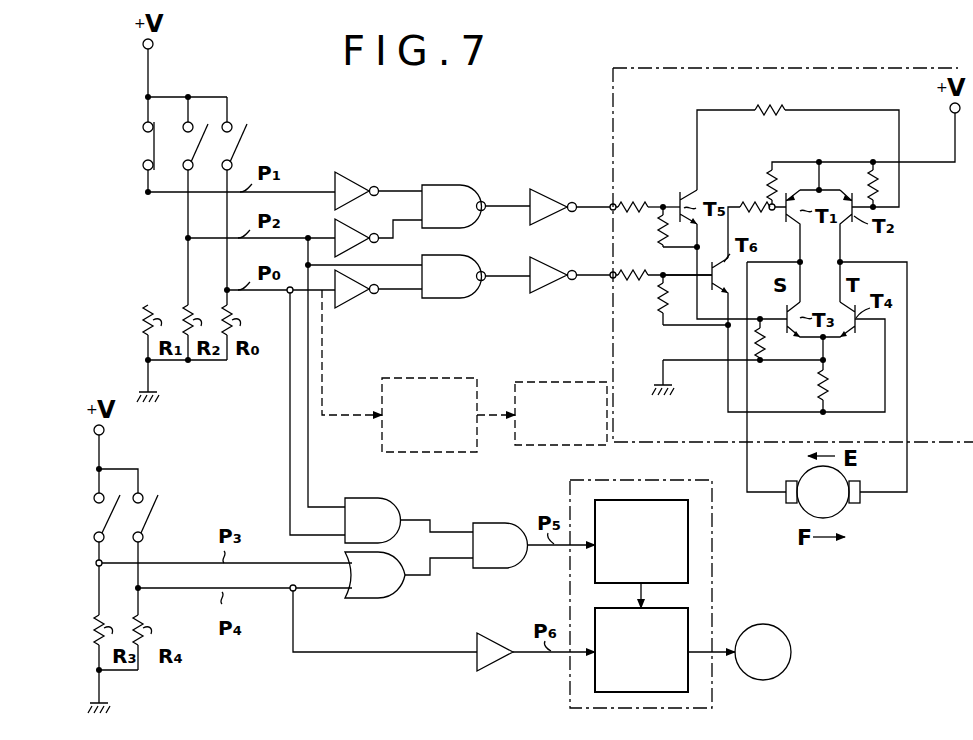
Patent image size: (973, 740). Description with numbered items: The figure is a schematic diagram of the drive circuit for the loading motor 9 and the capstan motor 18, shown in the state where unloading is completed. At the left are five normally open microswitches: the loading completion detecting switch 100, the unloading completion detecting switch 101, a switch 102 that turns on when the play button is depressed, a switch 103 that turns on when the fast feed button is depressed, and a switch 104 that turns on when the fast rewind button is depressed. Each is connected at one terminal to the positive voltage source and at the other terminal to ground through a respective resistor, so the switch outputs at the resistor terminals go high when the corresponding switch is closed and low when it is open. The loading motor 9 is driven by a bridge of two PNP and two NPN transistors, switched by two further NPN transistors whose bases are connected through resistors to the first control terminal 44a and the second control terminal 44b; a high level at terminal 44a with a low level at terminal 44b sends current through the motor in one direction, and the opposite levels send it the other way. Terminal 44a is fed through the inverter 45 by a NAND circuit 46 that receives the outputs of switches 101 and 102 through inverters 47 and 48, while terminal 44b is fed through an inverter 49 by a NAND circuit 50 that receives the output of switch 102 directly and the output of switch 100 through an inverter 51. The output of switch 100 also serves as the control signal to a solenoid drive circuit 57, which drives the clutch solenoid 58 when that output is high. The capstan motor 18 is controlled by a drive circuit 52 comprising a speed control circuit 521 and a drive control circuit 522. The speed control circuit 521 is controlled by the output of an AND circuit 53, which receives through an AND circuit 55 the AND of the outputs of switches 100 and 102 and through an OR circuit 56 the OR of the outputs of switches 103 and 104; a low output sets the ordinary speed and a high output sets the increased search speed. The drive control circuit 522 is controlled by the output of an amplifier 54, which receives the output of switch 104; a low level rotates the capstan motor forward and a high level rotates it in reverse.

The loading completion detecting switch 100 is at (246, 138).
The unloading completion detecting switch 101 is at (150, 146).
The switch 102 is at (192, 150).
The switch 103 is at (104, 516).
The switch 104 is at (150, 514).
The inverter 47 is at (352, 182).
The inverter 48 is at (352, 232).
The NAND circuit 46 is at (452, 184).
The inverter 45 is at (545, 192).
The first control terminal 44a is at (616, 200).
The second control terminal 44b is at (616, 282).
The inverter 51 is at (360, 300).
The NAND circuit 50 is at (457, 298).
The inverter 49 is at (550, 290).
The solenoid drive circuit 57 is at (430, 378).
The clutch solenoid 58 is at (565, 376).
The AND circuit 55 is at (383, 497).
The OR circuit 56 is at (385, 598).
The AND circuit 53 is at (492, 522).
The amplifier 54 is at (498, 662).
The drive circuit 52 is at (671, 596).
The speed control circuit 521 is at (688, 530).
The drive control circuit 522 is at (683, 675).
The loading motor 9 is at (842, 506).
The capstan motor 18 is at (782, 672).